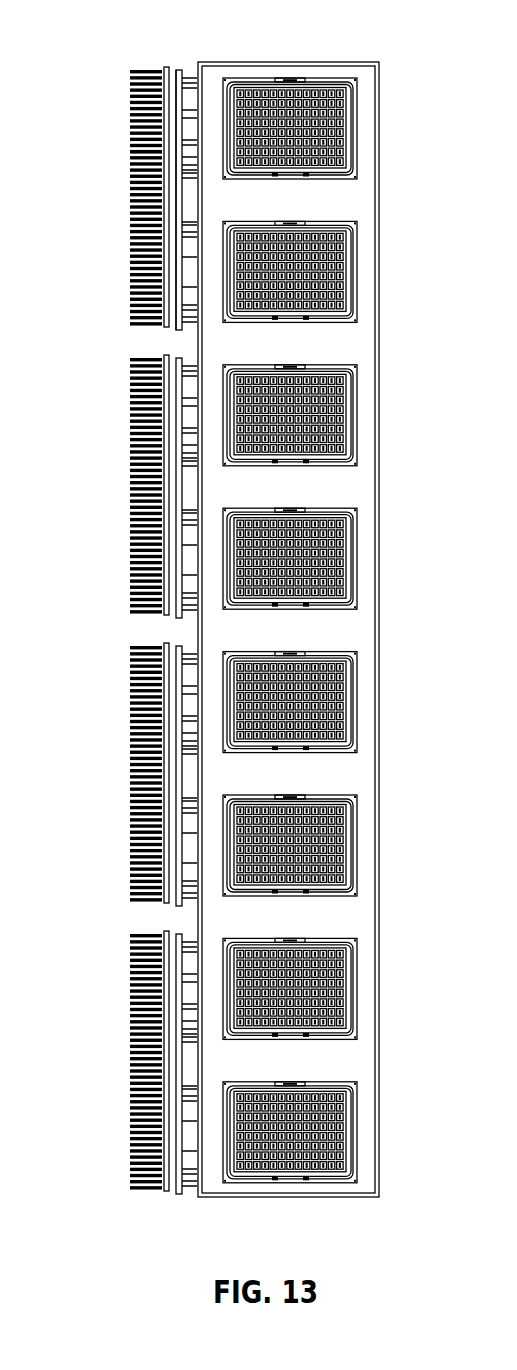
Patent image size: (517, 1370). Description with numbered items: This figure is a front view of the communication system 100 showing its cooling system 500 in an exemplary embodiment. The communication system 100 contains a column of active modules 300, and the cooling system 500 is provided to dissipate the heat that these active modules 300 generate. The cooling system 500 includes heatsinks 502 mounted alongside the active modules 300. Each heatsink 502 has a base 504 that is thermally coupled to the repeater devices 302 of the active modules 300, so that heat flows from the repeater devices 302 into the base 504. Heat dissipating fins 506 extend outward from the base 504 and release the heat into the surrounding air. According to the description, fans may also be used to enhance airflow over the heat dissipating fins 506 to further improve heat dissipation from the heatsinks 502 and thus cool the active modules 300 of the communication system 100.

The communication system 100 is at (271, 41).
The active modules 300 is at (189, 69).
The repeater devices 302 is at (175, 198).
The cooling system 500 is at (95, 175).
The heatsinks 502 is at (92, 198).
The base 504 is at (165, 267).
The heat dissipating fins 506 is at (132, 150).